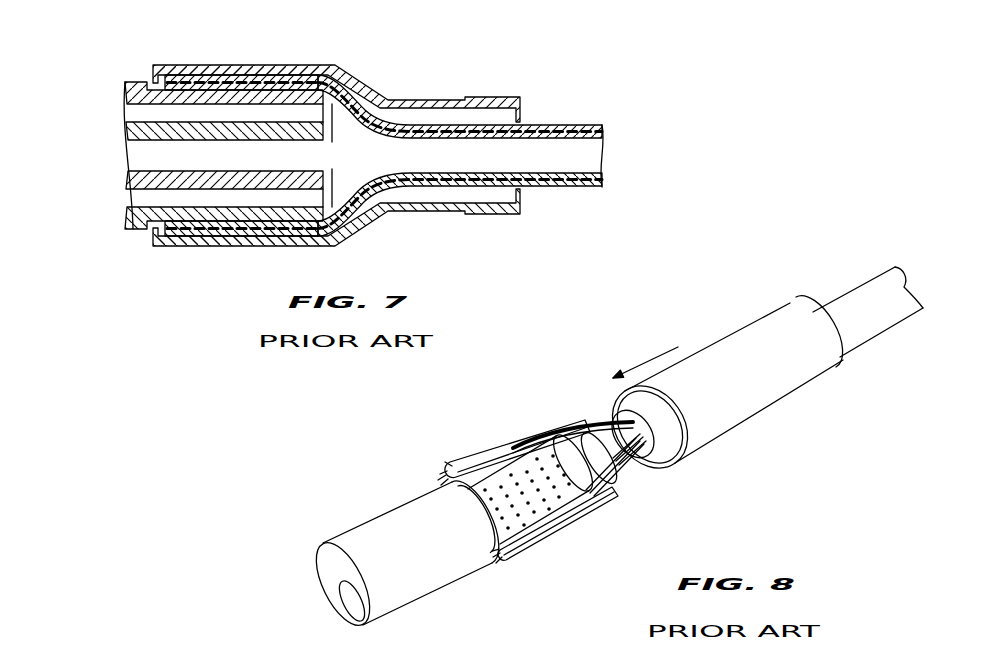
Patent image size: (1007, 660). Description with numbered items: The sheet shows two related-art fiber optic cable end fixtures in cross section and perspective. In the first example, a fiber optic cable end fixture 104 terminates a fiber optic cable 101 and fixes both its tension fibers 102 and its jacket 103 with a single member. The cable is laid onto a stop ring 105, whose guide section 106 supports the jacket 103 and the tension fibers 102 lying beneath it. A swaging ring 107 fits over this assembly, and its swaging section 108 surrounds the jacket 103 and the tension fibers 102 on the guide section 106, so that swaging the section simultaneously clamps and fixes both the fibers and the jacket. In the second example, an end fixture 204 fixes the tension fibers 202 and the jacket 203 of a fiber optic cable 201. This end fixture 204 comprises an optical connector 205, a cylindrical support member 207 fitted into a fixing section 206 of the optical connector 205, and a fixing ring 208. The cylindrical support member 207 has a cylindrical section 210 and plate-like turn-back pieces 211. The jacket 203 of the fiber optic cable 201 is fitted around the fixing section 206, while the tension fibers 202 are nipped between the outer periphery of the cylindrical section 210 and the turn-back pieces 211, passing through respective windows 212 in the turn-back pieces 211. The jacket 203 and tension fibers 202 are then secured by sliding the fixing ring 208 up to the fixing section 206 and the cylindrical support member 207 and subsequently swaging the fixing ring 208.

In FIG. 7, the fiber optic cable 101 is at (493, 155).
In FIG. 7, the tension fibers 102 is at (603, 131).
In FIG. 7, the jacket 103 is at (603, 183).
In FIG. 7, the fiber optic cable end fixture 104 is at (285, 126).
In FIG. 7, the stop ring 105 is at (124, 85).
In FIG. 7, the guide section 106 is at (197, 96).
In FIG. 7, the swaging ring 107 is at (360, 72).
In FIG. 7, the swaging section 108 is at (258, 68).
In FIG. 8, the fiber optic cable 201 is at (637, 462).
In FIG. 8, the tension fibers 202 is at (597, 492).
In FIG. 8, the jacket 203 is at (657, 442).
In FIG. 8, the end fixture 204 is at (478, 508).
In FIG. 8, the optical connector 205 is at (362, 518).
In FIG. 8, the fixing section 206 is at (574, 438).
In FIG. 8, the cylindrical support member 207 is at (550, 505).
In FIG. 8, the fixing ring 208 is at (760, 388).
In FIG. 8, the cylindrical section 210 is at (513, 555).
In FIG. 8, the turn-back pieces 211 is at (473, 460).
In FIG. 8, the windows 212 is at (510, 450).